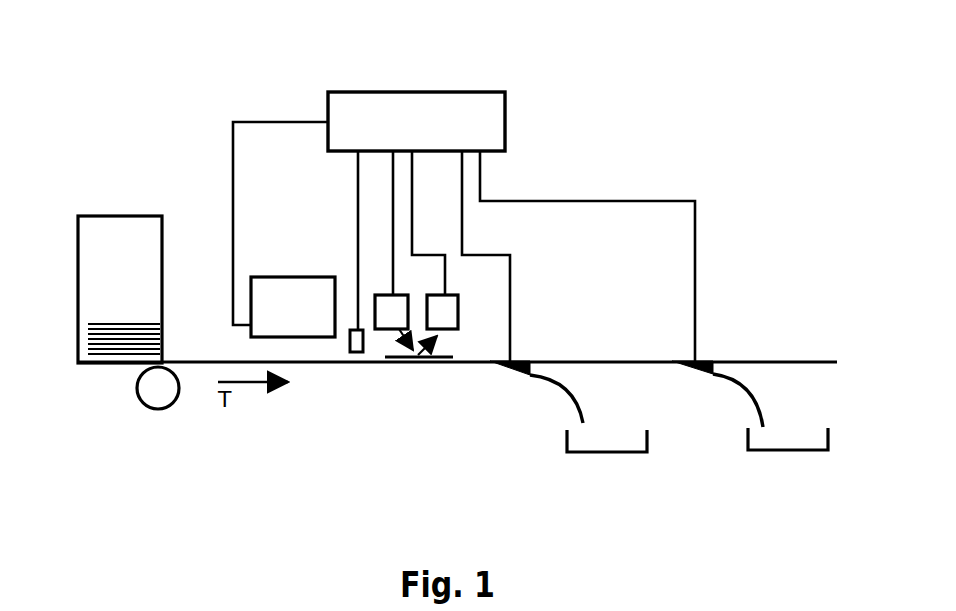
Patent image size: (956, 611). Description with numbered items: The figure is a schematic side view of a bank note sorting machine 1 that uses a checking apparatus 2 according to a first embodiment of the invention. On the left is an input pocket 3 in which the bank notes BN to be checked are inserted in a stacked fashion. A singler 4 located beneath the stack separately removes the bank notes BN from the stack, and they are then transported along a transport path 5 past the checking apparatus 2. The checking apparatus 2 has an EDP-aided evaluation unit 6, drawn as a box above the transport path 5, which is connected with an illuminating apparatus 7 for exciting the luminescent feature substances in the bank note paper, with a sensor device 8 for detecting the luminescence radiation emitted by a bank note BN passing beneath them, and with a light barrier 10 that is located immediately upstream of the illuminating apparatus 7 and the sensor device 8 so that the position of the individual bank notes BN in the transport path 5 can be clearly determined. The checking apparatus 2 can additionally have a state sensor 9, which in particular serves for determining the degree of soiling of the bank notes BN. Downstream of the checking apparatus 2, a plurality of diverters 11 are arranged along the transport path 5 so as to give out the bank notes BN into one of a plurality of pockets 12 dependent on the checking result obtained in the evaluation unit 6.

The bank note sorting machine 1 is at (184, 70).
The checking apparatus 2 is at (552, 132).
The input pocket 3 is at (102, 223).
The singler 4 is at (150, 390).
The transport path 5 is at (204, 360).
The EDP-aided evaluation unit 6 is at (352, 107).
The illuminating apparatus 7 is at (388, 295).
The sensor device 8 is at (448, 303).
The state sensor 9 is at (285, 297).
The light barrier 10 is at (357, 353).
The diverters 11 is at (527, 362).
The pockets 12 is at (597, 453).
The bank notes BN is at (88, 345).